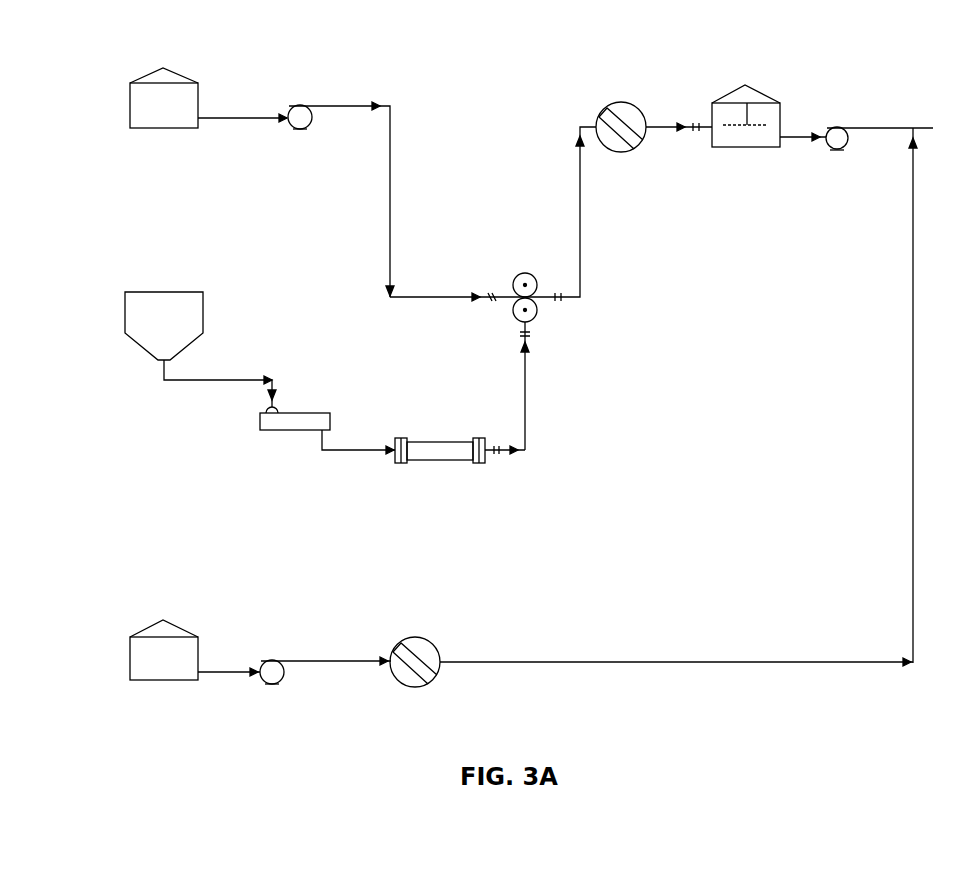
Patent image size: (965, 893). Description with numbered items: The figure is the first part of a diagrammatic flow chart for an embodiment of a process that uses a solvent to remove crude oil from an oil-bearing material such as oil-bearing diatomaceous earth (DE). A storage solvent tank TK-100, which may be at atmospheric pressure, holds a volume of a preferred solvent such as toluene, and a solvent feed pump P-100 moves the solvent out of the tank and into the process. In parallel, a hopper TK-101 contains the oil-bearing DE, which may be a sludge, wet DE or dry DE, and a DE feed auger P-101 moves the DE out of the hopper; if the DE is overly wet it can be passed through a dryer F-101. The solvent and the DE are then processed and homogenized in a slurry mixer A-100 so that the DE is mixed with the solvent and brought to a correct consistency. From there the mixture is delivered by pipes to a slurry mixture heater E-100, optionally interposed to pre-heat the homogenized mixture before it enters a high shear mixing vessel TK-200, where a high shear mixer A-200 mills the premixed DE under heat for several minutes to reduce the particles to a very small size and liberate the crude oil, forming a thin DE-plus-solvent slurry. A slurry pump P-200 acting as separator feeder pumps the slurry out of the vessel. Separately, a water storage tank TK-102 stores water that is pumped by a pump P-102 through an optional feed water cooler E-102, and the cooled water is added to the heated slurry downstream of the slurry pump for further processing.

The storage solvent tank TK-100 is at (205, 58).
The solvent feed pump P-100 is at (337, 165).
The slurry mixture heater E-100 is at (655, 92).
The high shear mixing vessel TK-200 is at (795, 66).
The high shear mixer A-200 is at (783, 188).
The slurry pump P-200 is at (877, 188).
The hopper TK-101 is at (205, 272).
The DE feed auger P-101 is at (295, 458).
The dryer F-101 is at (473, 425).
The slurry mixer A-100 is at (562, 262).
The water storage tank TK-102 is at (205, 603).
The pump P-102 is at (312, 718).
The feed water cooler E-102 is at (443, 722).